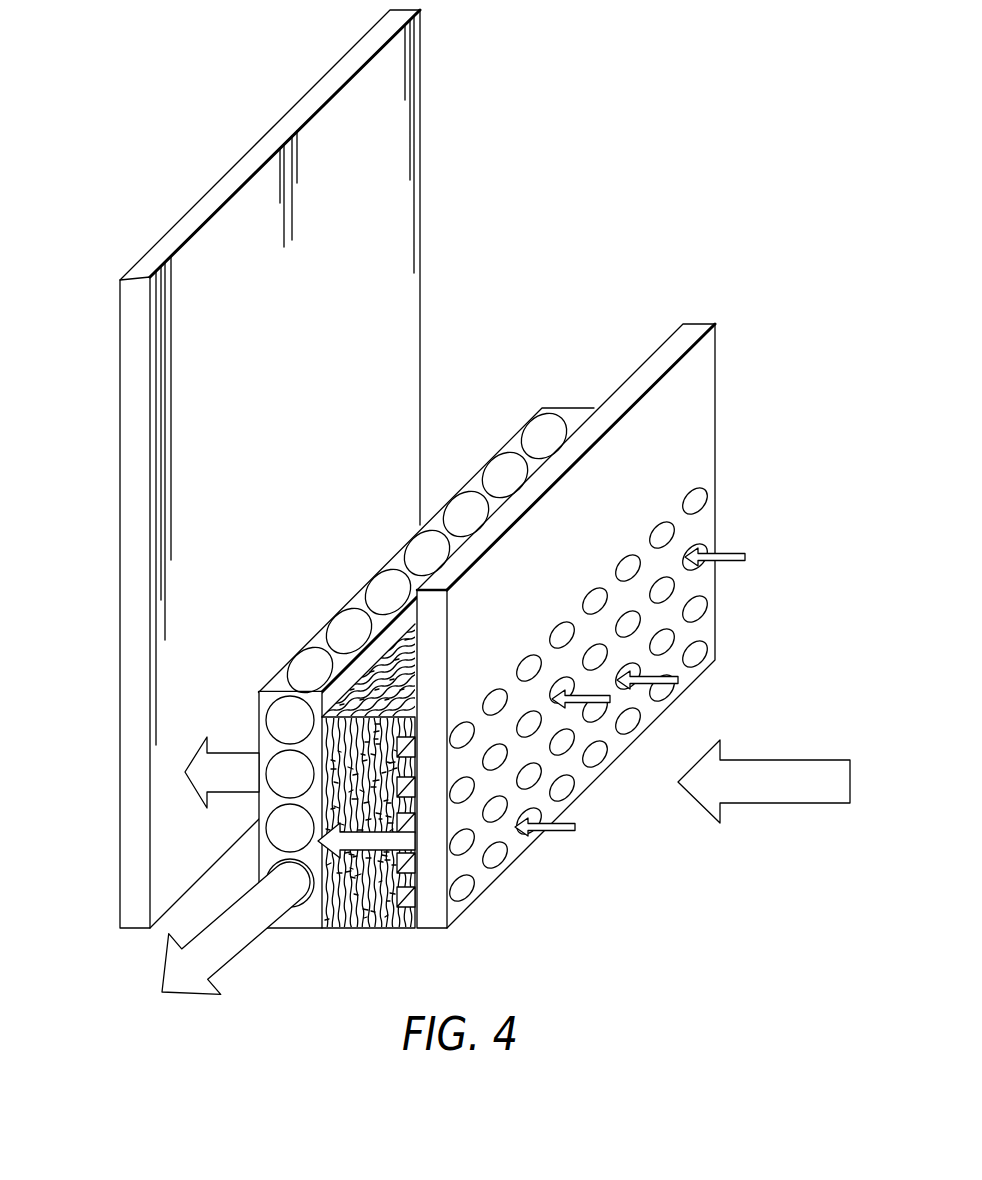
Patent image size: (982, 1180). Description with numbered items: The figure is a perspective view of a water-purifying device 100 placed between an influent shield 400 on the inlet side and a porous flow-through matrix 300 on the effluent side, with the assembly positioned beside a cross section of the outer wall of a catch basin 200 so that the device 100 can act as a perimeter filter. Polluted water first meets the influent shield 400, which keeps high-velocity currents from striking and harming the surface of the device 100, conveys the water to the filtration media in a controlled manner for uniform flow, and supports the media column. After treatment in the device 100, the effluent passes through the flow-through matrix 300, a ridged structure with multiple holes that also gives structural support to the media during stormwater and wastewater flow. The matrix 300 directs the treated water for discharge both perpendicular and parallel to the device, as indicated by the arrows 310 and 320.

The device 100 is at (373, 930).
The outer wall of the catch basin 200 is at (120, 562).
The flow-through matrix 300 is at (576, 408).
The arrow 310 is at (242, 775).
The arrow 320 is at (223, 945).
The influent shield 400 is at (695, 392).